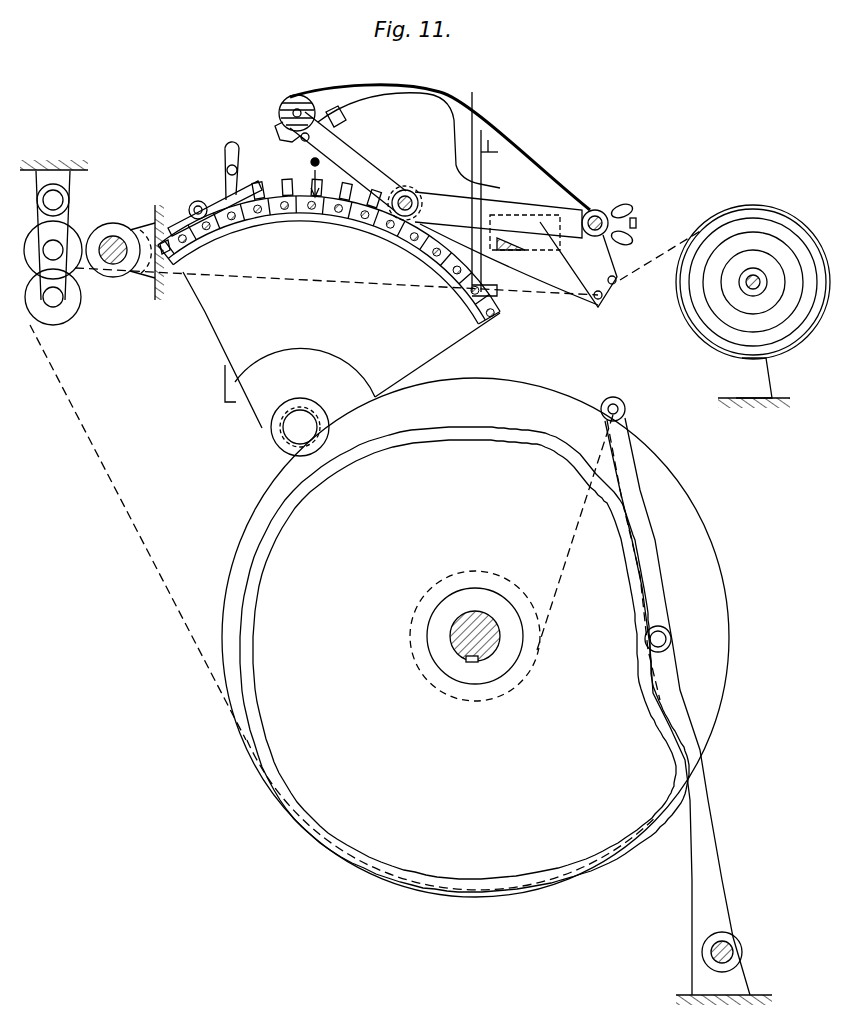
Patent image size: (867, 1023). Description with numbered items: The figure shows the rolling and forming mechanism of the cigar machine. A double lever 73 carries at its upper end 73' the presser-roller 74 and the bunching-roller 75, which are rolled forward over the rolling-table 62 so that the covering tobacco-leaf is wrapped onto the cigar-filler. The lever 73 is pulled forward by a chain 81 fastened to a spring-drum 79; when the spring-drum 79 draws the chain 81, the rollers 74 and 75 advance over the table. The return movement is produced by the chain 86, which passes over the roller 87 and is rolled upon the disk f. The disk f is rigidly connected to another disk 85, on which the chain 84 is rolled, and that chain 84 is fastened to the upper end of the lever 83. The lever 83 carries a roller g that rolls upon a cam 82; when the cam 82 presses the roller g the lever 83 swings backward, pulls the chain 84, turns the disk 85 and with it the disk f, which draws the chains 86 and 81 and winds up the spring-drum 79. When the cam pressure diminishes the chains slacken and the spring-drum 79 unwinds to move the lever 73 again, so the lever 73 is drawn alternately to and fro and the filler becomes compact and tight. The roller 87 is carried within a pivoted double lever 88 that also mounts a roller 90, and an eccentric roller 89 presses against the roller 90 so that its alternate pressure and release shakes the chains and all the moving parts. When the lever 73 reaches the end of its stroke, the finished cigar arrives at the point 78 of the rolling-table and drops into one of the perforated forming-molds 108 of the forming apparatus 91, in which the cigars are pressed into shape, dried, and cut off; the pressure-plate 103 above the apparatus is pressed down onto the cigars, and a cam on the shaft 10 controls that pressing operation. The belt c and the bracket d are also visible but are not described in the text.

The shaft 10 is at (482, 655).
The rolling-table 62 is at (395, 110).
The double lever 73 is at (525, 242).
The upper end of the double lever 73' is at (356, 166).
The presser-roller 74 is at (300, 94).
The bunching-roller 75 is at (300, 141).
The point of the rolling-table 78 is at (338, 118).
The spring-drum 79 is at (796, 340).
The chain 81 is at (652, 260).
The cam 82 is at (493, 443).
The lever 83 is at (636, 488).
The chain 84 is at (560, 572).
The disk 85 is at (528, 672).
The chain 86 is at (315, 283).
The roller 87 is at (76, 311).
The pivoted double lever 88 is at (64, 216).
The eccentric roller 89 is at (110, 224).
The roller 90 is at (38, 242).
The forming apparatus 91 is at (329, 326).
The pressure-plate 103 is at (218, 207).
The forming-molds 108 is at (318, 222).
The belt c is at (440, 147).
The bracket d is at (490, 194).
The disk f is at (475, 637).
The roller g is at (672, 638).